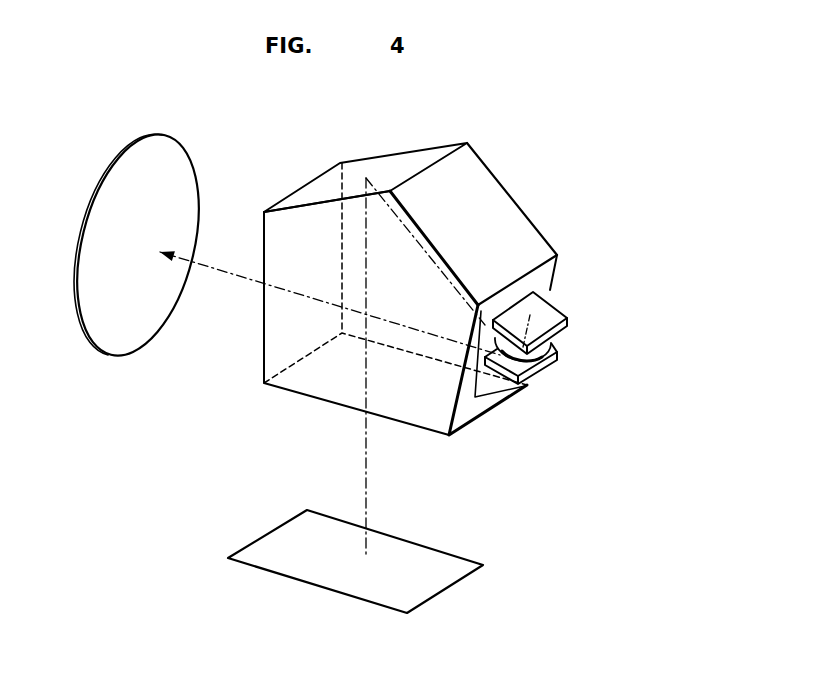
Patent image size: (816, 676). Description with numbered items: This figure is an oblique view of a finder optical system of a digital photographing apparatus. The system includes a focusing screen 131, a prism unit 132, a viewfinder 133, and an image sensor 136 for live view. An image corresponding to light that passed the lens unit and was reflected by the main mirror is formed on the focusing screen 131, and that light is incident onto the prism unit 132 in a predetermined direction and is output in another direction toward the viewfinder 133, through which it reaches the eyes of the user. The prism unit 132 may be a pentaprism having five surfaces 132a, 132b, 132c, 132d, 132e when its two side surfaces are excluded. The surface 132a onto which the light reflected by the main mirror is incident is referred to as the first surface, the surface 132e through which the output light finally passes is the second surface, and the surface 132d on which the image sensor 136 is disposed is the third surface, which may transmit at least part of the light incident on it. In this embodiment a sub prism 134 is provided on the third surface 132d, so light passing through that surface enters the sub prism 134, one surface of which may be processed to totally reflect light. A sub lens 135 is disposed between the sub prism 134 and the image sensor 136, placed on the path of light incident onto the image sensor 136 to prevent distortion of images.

The focusing screen 131 is at (443, 573).
The prism unit 132 is at (525, 124).
The first surface 132a is at (353, 384).
The surface of prism unit 132b is at (398, 167).
The surface of prism unit 132c is at (493, 228).
The third surface 132d is at (466, 410).
The second surface 132e is at (290, 329).
The viewfinder 133 is at (105, 332).
The sub prism 134 is at (548, 367).
The sub lens 135 is at (542, 347).
The image sensor for live view 136 is at (567, 322).